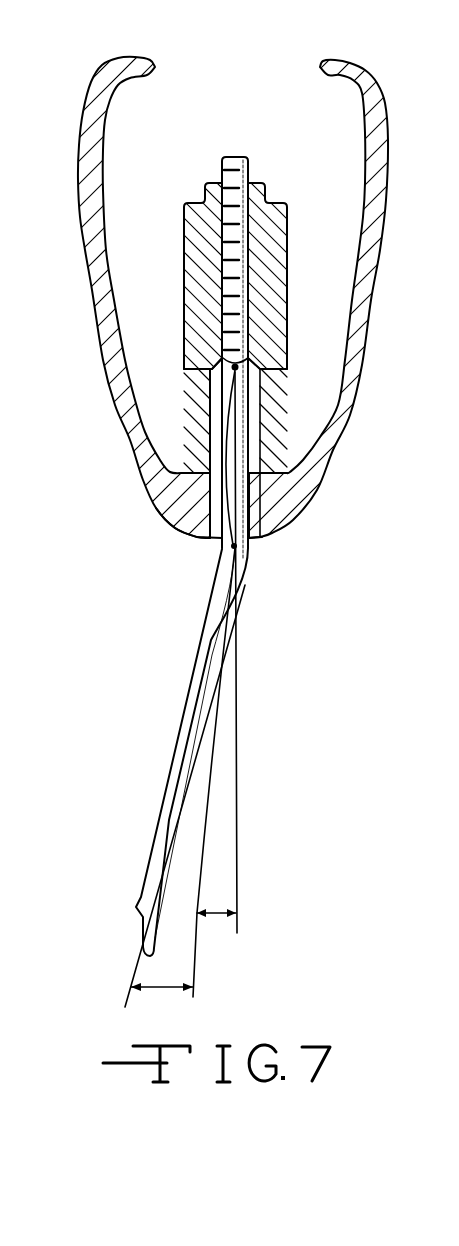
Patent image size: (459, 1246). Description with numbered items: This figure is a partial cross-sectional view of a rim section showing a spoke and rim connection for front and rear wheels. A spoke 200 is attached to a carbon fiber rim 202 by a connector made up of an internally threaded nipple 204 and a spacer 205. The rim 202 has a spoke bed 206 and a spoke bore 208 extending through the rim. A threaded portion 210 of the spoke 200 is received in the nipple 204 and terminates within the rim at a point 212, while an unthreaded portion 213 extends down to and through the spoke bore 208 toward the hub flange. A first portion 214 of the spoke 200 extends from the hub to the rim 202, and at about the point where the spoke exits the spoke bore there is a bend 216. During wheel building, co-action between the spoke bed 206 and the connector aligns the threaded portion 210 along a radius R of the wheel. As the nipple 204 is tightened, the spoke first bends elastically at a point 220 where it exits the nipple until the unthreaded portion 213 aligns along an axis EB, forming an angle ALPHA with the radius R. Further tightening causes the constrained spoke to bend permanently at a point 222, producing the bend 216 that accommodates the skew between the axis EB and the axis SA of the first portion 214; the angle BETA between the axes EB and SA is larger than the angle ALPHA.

The spoke 200 is at (173, 750).
The carbon fiber rim 202 is at (367, 350).
The internally threaded nipple 204 is at (290, 227).
The spacer 205 is at (287, 381).
The spoke bed 206 is at (268, 473).
The spoke bore 208 is at (262, 532).
The threaded portion 210 is at (248, 173).
The point where threaded portion terminates 212 is at (221, 384).
The unthreaded portion 213 is at (202, 426).
The first portion 214 is at (199, 636).
The bend 216 is at (205, 538).
The point where spoke exits nipple 220 is at (250, 357).
The bend point 222 is at (229, 550).
The radius of the wheel R is at (240, 835).
The axis of the unthreaded portion EB is at (207, 802).
The axis of the first portion SA is at (163, 866).
The angle alpha ALPHA is at (217, 904).
The angle beta BETA is at (141, 990).